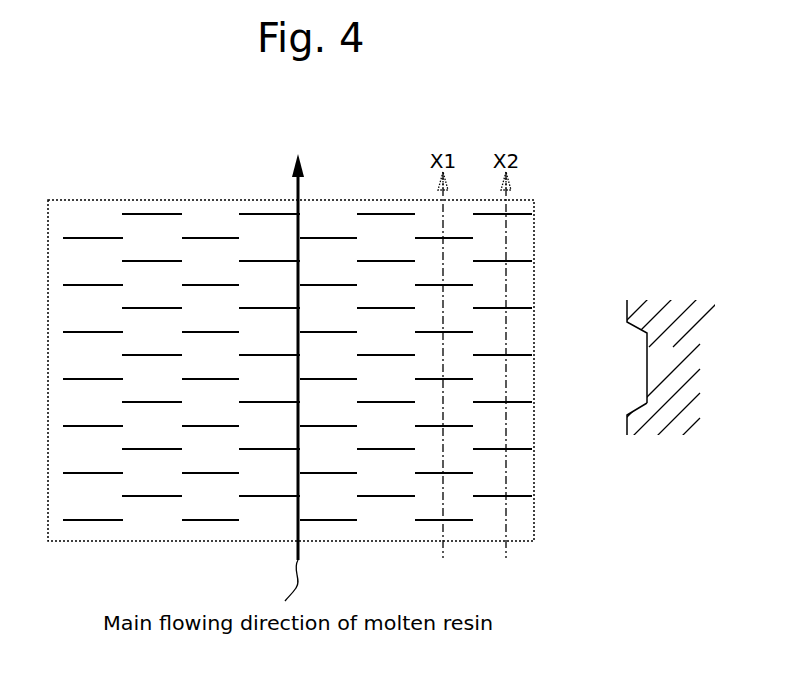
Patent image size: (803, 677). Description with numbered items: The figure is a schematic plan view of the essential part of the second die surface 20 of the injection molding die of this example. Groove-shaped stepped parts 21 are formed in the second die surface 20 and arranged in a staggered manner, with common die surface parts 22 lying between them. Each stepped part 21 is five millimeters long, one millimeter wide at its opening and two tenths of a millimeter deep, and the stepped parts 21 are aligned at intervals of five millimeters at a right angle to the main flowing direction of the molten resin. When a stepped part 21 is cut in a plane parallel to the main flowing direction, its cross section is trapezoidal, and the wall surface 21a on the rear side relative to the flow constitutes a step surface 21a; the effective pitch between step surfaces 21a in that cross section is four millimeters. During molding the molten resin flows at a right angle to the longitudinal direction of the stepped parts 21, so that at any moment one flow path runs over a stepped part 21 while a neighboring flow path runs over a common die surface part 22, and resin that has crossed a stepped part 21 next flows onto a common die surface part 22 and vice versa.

The second die surface 20 is at (523, 413).
The groove-shaped stepped part 21 is at (204, 238).
The step surface 21a is at (633, 405).
The common die surface part 22 is at (382, 224).